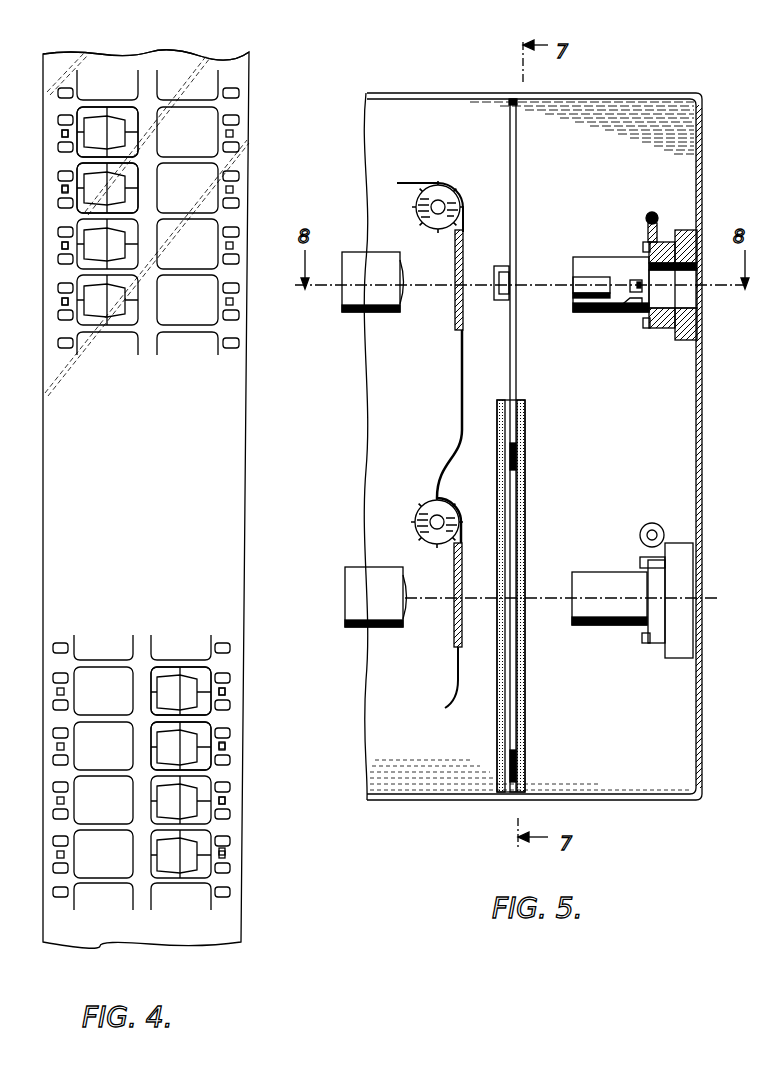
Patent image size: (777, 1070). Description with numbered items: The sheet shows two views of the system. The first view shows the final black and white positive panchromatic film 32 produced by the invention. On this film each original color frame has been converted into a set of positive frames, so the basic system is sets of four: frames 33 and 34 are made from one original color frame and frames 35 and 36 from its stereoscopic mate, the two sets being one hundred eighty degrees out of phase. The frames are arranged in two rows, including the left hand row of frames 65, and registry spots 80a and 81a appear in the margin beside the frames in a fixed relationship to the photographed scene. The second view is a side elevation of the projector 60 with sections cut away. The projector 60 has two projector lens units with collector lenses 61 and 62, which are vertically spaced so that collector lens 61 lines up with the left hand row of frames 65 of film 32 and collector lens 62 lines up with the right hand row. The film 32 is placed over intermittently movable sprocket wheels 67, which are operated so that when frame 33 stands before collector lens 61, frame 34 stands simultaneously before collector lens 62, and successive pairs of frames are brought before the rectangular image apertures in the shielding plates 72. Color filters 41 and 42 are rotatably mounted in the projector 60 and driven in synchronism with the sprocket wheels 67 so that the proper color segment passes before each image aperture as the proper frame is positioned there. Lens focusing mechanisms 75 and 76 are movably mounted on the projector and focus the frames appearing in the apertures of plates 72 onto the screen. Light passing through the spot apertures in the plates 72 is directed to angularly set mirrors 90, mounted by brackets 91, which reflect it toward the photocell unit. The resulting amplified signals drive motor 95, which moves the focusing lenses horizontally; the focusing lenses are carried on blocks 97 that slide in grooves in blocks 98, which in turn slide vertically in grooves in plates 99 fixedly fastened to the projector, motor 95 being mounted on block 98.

In FIG. 4, the positive panchromatic film 32 is at (262, 572).
In FIG. 5, the positive panchromatic film 32 is at (461, 382).
In FIG. 4, the positive frame 33 is at (86, 112).
In FIG. 4, the positive frame 34 is at (210, 672).
In FIG. 4, the positive frame 35 is at (83, 203).
In FIG. 4, the positive frame 36 is at (208, 766).
In FIG. 4, the left hand row of frames 65 is at (130, 42).
In FIG. 4, the registry spot 80a is at (61, 134).
In FIG. 4, the registry spot 81a is at (62, 188).
In FIG. 5, the projector 60 is at (670, 90).
In FIG. 5, the filter 41 is at (532, 236).
In FIG. 5, the filter 42 is at (512, 545).
In FIG. 5, the collector lens 61 is at (400, 313).
In FIG. 5, the collector lens 62 is at (395, 628).
In FIG. 5, the sprocket wheel 67 is at (444, 196).
In FIG. 5, the shielding plate 72 is at (456, 252).
In FIG. 5, the lens focusing mechanism 75 is at (612, 257).
In FIG. 5, the lens focusing mechanism 76 is at (603, 572).
In FIG. 5, the angularly set mirror 90 is at (633, 306).
In FIG. 5, the bracket 91 is at (645, 306).
In FIG. 5, the motor 95 is at (651, 524).
In FIG. 5, the block 97 is at (657, 232).
In FIG. 5, the block 98 is at (688, 340).
In FIG. 5, the plate 99 is at (668, 332).